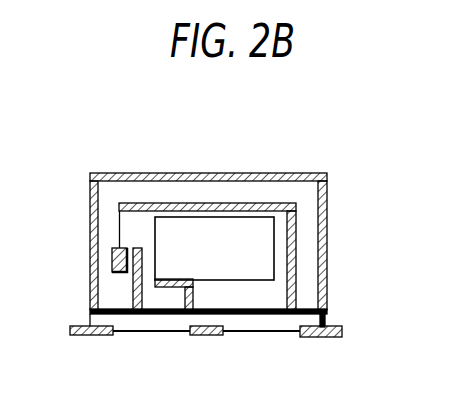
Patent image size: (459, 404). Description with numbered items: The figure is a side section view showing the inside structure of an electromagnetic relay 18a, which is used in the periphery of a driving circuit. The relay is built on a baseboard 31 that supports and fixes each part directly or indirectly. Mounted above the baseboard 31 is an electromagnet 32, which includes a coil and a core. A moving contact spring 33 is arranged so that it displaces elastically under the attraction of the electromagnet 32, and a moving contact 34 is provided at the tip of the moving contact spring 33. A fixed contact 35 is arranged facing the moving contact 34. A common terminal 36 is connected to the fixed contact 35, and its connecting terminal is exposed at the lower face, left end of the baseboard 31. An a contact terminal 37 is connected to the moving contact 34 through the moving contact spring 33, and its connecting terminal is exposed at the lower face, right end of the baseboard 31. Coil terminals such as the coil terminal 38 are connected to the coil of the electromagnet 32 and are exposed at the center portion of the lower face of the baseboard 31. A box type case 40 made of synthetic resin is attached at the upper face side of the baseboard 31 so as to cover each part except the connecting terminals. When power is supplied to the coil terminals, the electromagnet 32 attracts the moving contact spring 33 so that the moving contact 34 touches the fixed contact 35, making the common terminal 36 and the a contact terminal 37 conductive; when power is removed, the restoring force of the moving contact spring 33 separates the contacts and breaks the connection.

The electromagnetic relay 18a is at (380, 128).
The baseboard 31 is at (323, 318).
The electromagnet 32 is at (274, 247).
The moving contact spring 33 is at (237, 203).
The moving contact 34 is at (112, 262).
The fixed contact 35 is at (133, 290).
The common terminal 36 is at (90, 335).
The a contact terminal 37 is at (320, 337).
The coil terminal 38 is at (207, 335).
The box type case 40 is at (152, 173).